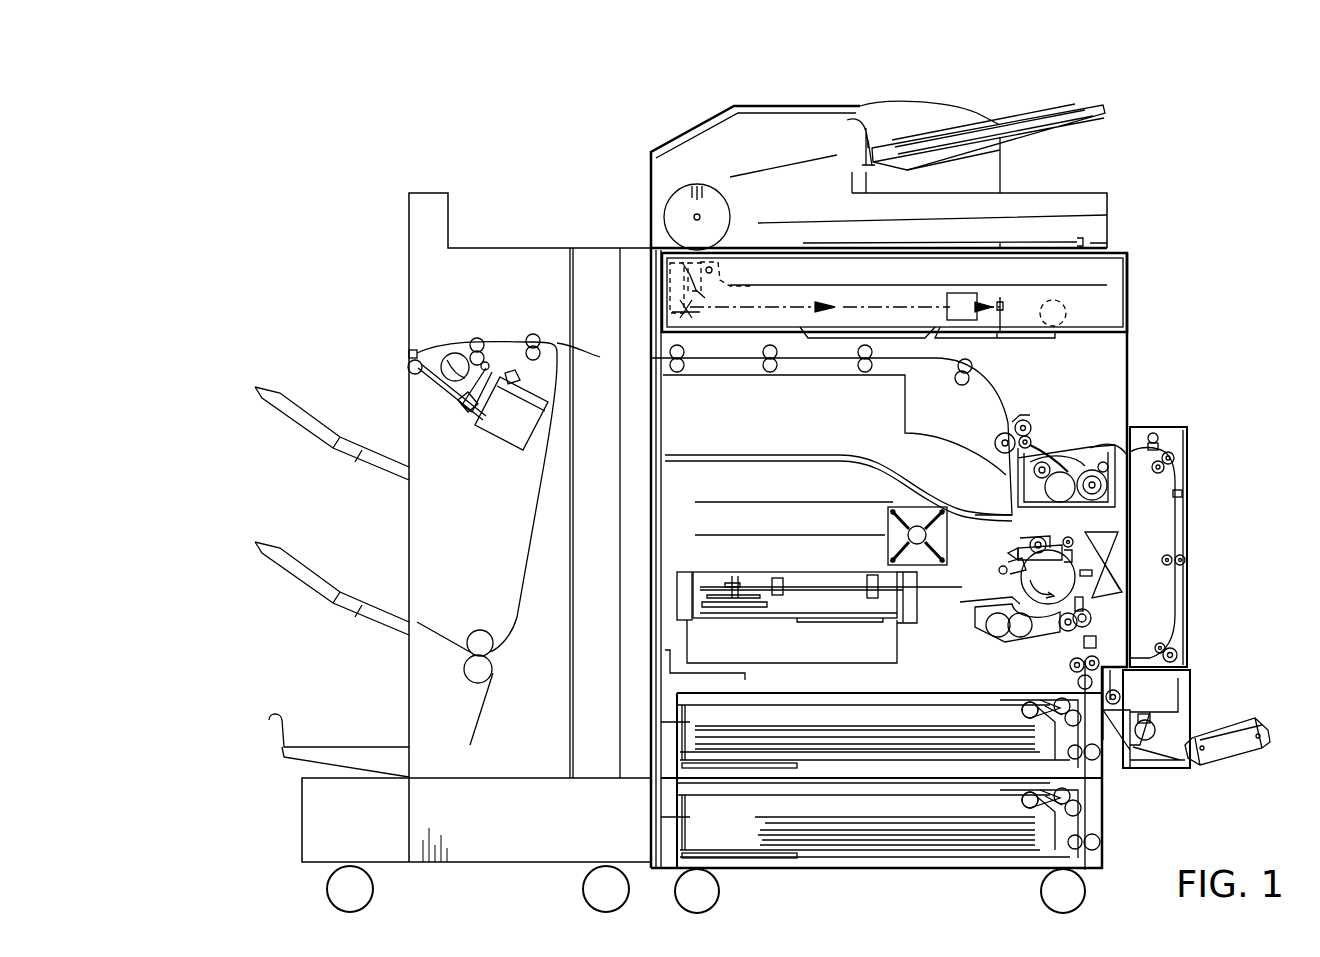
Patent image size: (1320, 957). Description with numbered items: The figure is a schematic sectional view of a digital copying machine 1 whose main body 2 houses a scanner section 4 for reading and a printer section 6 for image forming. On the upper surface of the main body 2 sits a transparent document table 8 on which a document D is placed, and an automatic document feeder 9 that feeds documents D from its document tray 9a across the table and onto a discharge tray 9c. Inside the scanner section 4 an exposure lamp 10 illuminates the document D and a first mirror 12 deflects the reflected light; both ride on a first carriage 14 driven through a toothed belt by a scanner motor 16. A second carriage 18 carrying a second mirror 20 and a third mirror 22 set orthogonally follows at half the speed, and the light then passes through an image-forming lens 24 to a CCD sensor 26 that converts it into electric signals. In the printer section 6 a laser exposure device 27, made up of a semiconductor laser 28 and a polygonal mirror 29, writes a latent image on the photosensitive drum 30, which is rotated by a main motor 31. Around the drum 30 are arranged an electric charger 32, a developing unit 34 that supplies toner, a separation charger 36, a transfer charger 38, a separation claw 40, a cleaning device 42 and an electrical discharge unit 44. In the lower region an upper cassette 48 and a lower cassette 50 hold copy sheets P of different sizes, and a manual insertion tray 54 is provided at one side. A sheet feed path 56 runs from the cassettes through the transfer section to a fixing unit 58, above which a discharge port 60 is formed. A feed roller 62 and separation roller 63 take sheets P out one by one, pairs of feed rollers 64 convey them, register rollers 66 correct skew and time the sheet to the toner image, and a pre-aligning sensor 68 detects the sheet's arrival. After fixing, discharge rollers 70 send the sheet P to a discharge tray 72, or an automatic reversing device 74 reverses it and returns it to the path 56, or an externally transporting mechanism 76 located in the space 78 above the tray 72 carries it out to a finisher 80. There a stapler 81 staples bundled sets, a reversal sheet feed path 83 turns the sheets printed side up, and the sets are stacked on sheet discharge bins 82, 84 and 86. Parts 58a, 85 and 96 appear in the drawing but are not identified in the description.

The digital copying machine 1 is at (1188, 214).
The main body 2 is at (1128, 386).
The scanner section 4 is at (1130, 300).
The printer section 6 is at (1198, 693).
The document table 8 is at (1072, 246).
The automatic document feeder 9 is at (735, 160).
The document tray 9a is at (1088, 128).
The discharge tray 9c is at (1032, 190).
The exposure lamp 10 is at (713, 270).
The first mirror 12 is at (705, 287).
The first carriage 14 is at (742, 274).
The scanner motor 16 is at (1066, 313).
The second carriage 18 is at (680, 295).
The second mirror 20 is at (690, 274).
The third mirror 22 is at (686, 310).
The image-forming lens 24 is at (963, 292).
The CCD sensor 26 is at (1004, 305).
The laser exposure device 27 is at (848, 568).
The semiconductor laser 28 is at (684, 588).
The polygonal mirror 29 is at (744, 580).
The photosensitive drum 30 is at (1062, 564).
The main motor 31 is at (948, 530).
The electric charger 32 is at (1020, 578).
The developing unit 34 is at (1020, 632).
The separation charger 36 is at (1090, 605).
The transfer charger 38 is at (1092, 580).
The separation claw 40 is at (1115, 548).
The cleaning device 42 is at (1024, 538).
The electrical discharge unit 44 is at (1006, 553).
The upper cassette 48 is at (661, 722).
The lower cassette 50 is at (661, 817).
The manual insertion tray 54 is at (1234, 770).
The sheet feed path 56 is at (1074, 557).
The fixing unit 58 is at (1065, 455).
The fixing roller 58a is at (1093, 470).
The discharge port 60 is at (1006, 432).
The feed roller 62 is at (1022, 801).
The separation roller 63 is at (1022, 715).
The feed rollers 64 is at (1130, 762).
The register rollers 66 is at (1062, 632).
The pre-aligning sensor 68 is at (1096, 647).
The discharge rollers 70 is at (1024, 420).
The discharge tray 72 is at (860, 457).
The automatic reversing device 74 is at (1204, 424).
The externally transporting mechanism 76 is at (847, 375).
The space 78 is at (812, 402).
The finisher 80 is at (489, 256).
The stapler 81 is at (503, 430).
The sheet discharge bin 82 is at (327, 418).
The reversal sheet feed path 83 is at (526, 559).
The sheet discharge bin 84 is at (327, 573).
The inlet roller 85 is at (409, 353).
The sheet discharge bin 86 is at (303, 765).
The paper roll 96 is at (664, 214).
The document D is at (1078, 107).
The copy sheet P is at (1045, 438).